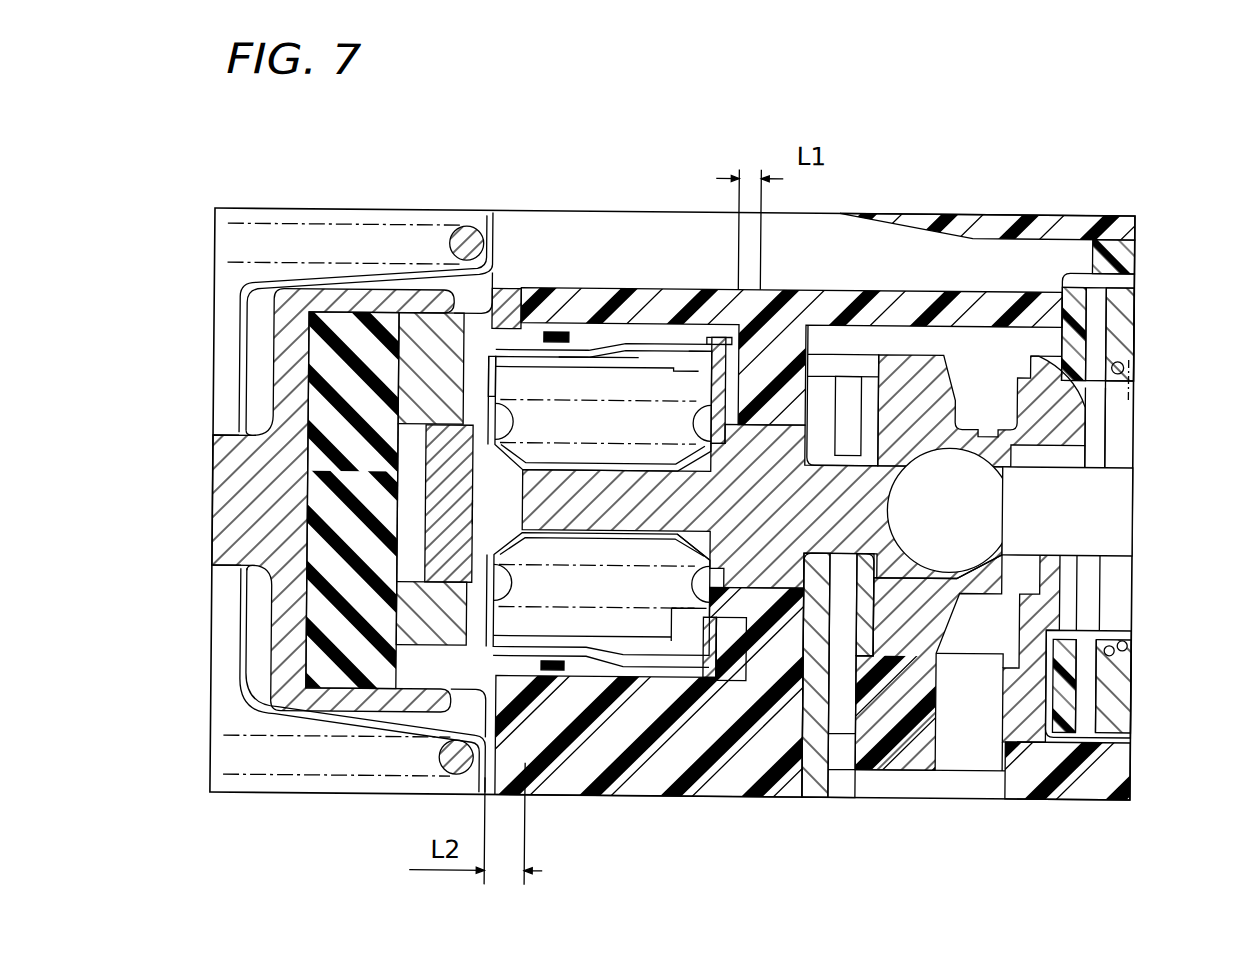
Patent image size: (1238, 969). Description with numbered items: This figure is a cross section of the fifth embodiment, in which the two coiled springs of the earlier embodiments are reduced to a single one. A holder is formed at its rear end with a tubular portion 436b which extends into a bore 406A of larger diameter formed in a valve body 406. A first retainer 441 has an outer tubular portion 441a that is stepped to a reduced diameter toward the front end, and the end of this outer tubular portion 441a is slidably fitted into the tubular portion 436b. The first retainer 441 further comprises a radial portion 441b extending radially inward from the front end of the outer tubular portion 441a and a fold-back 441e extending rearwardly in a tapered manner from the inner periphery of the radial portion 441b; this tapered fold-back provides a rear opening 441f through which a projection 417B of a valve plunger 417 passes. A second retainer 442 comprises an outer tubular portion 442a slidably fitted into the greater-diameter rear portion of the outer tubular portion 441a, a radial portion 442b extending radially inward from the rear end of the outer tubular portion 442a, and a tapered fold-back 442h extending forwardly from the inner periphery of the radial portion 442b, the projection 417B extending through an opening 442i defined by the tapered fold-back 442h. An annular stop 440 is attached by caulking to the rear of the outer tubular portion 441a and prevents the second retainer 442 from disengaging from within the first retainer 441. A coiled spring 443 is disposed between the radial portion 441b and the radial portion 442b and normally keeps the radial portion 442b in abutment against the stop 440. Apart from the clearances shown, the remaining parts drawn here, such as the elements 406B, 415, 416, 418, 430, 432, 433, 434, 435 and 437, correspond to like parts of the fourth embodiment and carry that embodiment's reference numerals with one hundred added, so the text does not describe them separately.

The valve body 406 is at (558, 793).
The bore 406A is at (573, 773).
The second housing portion 406B is at (800, 360).
The oil passage 415 is at (1122, 383).
The end ring 416 is at (1085, 286).
The valve plunger 417 is at (929, 358).
The projection 417B is at (548, 514).
The oil seal 418 is at (1063, 365).
The shaft 430 is at (1121, 533).
The spacer 432 is at (825, 786).
The seal member 433 is at (605, 343).
The upper sheet member 434 is at (397, 447).
The lower sheet member 435 is at (315, 630).
The tubular portion 436b is at (523, 327).
The support member 437 is at (230, 487).
The annular stop 440 is at (803, 420).
The first retainer 441 is at (640, 396).
The outer tubular portion 441a is at (578, 354).
The radial portion 441b is at (490, 382).
The fold-back 441e is at (490, 508).
The rear opening 441f is at (522, 469).
The second retainer 442 is at (705, 701).
The outer tubular portion 442a is at (700, 348).
The radial portion 442b is at (729, 691).
The tapered fold-back 442h is at (713, 541).
The opening 442i is at (682, 531).
The coiled spring 443 is at (612, 341).